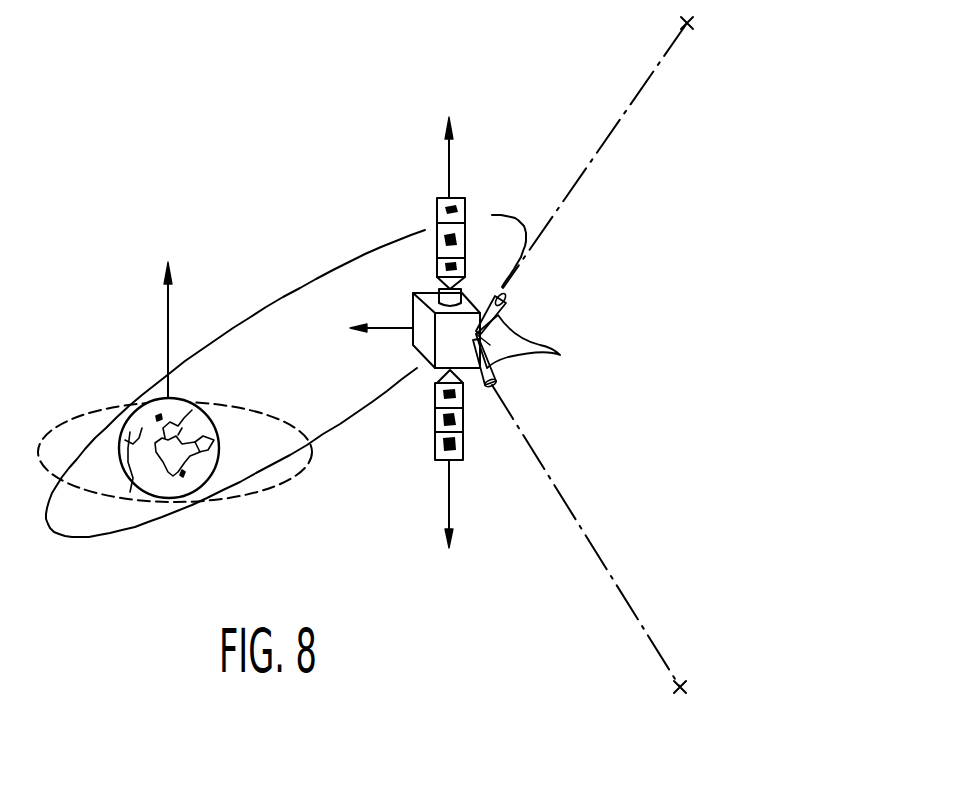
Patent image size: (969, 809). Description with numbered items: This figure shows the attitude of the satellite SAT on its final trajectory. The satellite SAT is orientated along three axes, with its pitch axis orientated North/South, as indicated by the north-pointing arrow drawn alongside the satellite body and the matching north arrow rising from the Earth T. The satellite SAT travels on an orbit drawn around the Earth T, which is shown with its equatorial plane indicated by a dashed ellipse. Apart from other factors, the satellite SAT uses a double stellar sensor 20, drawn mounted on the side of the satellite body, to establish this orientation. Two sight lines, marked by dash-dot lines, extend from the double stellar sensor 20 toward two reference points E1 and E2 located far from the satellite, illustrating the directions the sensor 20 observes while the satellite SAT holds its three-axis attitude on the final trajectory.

The double stellar sensor 20 is at (537, 340).
The satellite SAT is at (414, 294).
The Earth T is at (120, 445).
The first earth station E1 is at (622, 145).
The second earth station E2 is at (613, 546).